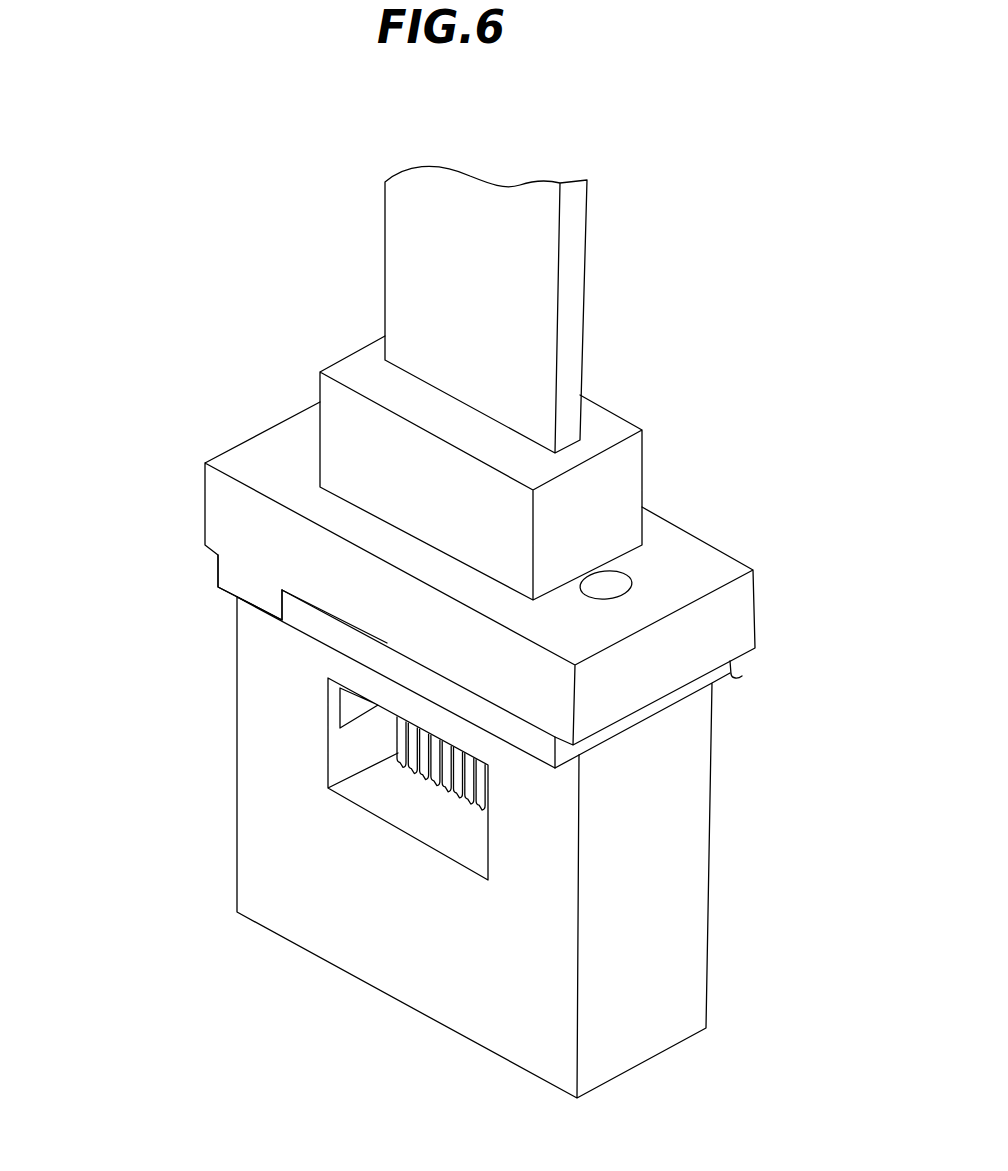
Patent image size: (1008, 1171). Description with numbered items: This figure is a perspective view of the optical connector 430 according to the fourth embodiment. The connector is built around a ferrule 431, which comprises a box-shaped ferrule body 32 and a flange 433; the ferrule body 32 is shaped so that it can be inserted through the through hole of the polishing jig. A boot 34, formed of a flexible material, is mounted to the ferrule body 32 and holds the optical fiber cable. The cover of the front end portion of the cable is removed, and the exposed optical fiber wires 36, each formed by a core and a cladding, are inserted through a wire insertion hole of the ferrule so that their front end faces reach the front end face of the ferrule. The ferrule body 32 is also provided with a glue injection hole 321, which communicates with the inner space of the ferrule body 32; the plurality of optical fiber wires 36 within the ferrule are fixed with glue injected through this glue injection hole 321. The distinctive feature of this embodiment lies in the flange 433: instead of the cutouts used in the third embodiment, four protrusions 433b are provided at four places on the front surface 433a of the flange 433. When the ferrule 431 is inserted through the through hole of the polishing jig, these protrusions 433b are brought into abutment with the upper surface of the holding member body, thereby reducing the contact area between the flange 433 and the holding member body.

The optical connector 430 is at (468, 521).
The boot 34 is at (603, 427).
The flange 433 is at (217, 505).
The front surface 433a is at (387, 643).
The protrusions 433b is at (232, 572).
The ferrule 431 is at (391, 847).
The ferrule body 32 is at (262, 720).
The optical fiber wires 36 is at (480, 788).
The glue injection hole 321 is at (430, 823).